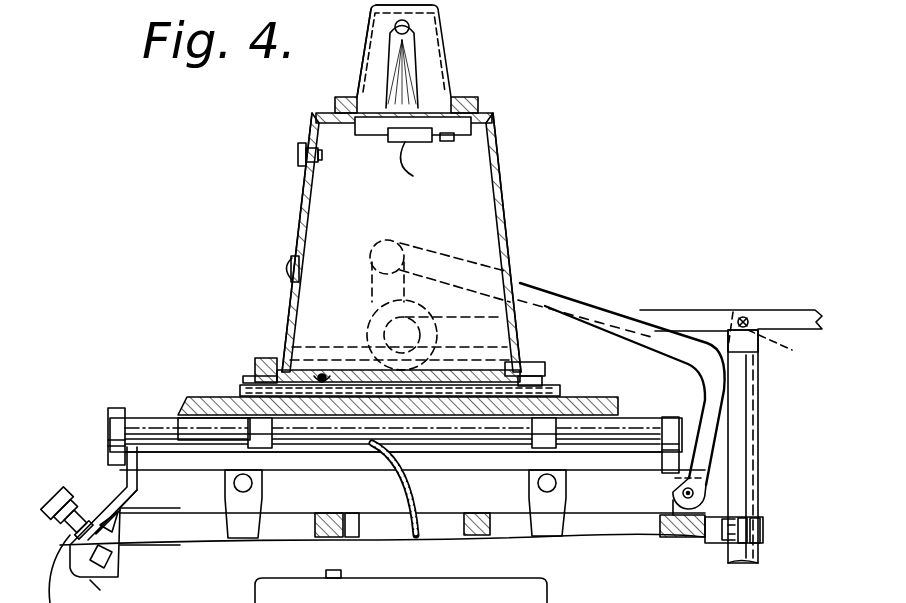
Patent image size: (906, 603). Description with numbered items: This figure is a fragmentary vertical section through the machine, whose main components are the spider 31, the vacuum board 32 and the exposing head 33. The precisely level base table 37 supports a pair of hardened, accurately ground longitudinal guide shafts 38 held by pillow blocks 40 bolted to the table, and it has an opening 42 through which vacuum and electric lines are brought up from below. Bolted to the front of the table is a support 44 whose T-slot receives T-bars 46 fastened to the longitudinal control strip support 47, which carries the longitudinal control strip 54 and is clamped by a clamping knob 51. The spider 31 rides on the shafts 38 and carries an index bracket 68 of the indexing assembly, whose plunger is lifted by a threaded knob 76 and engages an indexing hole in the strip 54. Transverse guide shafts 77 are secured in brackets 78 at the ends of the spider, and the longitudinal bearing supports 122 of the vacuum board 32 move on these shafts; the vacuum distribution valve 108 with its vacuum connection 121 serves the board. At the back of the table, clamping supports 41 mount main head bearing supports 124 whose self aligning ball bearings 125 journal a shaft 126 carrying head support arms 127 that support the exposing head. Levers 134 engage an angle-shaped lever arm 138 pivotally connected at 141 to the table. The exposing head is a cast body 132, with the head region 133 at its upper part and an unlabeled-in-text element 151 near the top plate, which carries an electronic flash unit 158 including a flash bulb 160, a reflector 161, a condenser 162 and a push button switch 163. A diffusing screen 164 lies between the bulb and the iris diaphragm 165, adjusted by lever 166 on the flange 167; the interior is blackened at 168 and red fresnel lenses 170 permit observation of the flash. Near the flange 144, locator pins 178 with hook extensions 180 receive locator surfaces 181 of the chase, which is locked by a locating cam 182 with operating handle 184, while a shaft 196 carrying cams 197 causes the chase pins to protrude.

The spider 31 is at (470, 480).
The vacuum board 32 is at (186, 400).
The exposing head 33 is at (505, 186).
The base table 37 is at (565, 538).
The longitudinal guide shafts 38 is at (252, 483).
The pillow blocks 40 is at (225, 482).
The clamping supports 41 is at (763, 530).
The opening 42 is at (380, 525).
The support 44 is at (105, 591).
The T-bars 46 is at (110, 558).
The longitudinal control strip support 47 is at (110, 528).
The clamping knob 51 is at (61, 569).
The longitudinal control strip 54 is at (116, 515).
The index bracket 68 is at (112, 485).
The threaded knob 76 is at (52, 496).
The transverse guide shafts 77 is at (638, 432).
The brackets 78 is at (108, 420).
The vacuum distribution valve 108 is at (272, 442).
The vacuum connection 121 is at (340, 446).
The longitudinal bearing supports 122 is at (252, 446).
The main head bearing supports 124 is at (748, 490).
The self aligning ball bearings 125 is at (773, 335).
The shaft 126 is at (743, 317).
The head support arms 127 is at (665, 312).
The cast body 132 is at (518, 200).
The hood 133 is at (456, 75).
The levers 134 is at (401, 300).
The lever arm 138 is at (528, 283).
The pivotal connection 141 is at (688, 498).
The flange 144 is at (520, 362).
The flange 151 is at (470, 105).
The electronic flash unit 158 is at (436, 8).
The flash bulb 160 is at (409, 28).
The reflector 161 is at (418, 60).
The condenser 162 is at (366, 73).
The push button switch 163 is at (298, 156).
The diffusing screen 164 is at (447, 141).
The iris diaphragm 165 is at (413, 176).
The lever 166 is at (432, 140).
The flange 167 is at (471, 128).
The blackened interior 168 is at (305, 200).
The red fresnel lenses 170 is at (290, 265).
The locator pins 178 is at (545, 368).
The hook extensions 180 is at (542, 382).
The locator surfaces 181 is at (430, 350).
The locating cam 182 is at (255, 364).
The operating handle 184 is at (243, 379).
The shaft 196 is at (321, 376).
The cams 197 is at (326, 378).